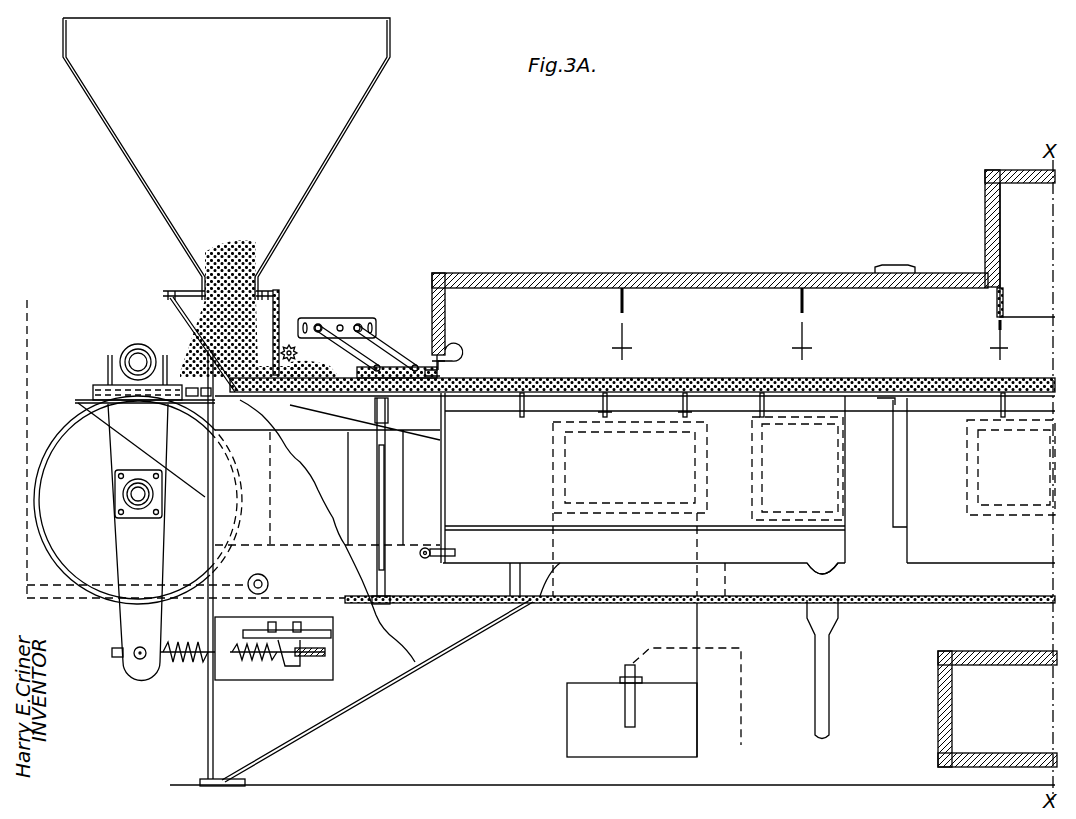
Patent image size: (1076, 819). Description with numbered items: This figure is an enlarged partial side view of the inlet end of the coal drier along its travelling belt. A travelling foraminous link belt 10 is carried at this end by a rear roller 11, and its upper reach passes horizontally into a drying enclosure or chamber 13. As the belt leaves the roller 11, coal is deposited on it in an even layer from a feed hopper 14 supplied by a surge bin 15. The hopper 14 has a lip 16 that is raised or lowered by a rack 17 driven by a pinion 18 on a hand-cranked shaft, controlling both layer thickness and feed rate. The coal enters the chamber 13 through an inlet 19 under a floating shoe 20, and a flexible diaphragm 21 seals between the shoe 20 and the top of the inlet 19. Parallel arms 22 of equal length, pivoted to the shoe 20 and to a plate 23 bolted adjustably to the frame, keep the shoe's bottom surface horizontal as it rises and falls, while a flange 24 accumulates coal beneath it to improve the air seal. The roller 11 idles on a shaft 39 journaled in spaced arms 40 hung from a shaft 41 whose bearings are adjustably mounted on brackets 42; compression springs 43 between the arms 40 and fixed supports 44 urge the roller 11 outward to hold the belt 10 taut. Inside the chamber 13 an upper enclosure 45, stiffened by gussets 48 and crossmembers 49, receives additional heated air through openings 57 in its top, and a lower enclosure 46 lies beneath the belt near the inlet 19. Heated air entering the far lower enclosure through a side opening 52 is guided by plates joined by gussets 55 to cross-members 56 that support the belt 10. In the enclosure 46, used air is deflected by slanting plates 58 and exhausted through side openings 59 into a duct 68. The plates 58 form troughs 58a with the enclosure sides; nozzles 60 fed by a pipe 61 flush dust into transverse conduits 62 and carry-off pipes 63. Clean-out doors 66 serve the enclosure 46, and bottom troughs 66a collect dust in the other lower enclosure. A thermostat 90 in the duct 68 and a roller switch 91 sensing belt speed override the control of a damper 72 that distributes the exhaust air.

The travelling foraminous link belt 10 is at (498, 398).
The rear roller 11 is at (88, 570).
The drying enclosure or chamber 13 is at (692, 273).
The feed hopper 14 is at (175, 308).
The surge bin 15 is at (146, 142).
The lip 16 is at (262, 404).
The rack 17 is at (283, 333).
The pinion 18 is at (298, 353).
The inlet 19 is at (442, 378).
The floating shoe 20 is at (398, 362).
The flexible diaphragm 21 is at (452, 345).
The parallel arms 22 is at (385, 350).
The plate 23 is at (361, 318).
The flange 24 is at (342, 368).
The shaft 39 is at (130, 494).
The spaced arms 40 is at (132, 630).
The shaft 41 is at (136, 360).
The brackets 42 is at (97, 422).
The compression springs 43 is at (180, 665).
The fixed supports 44 is at (285, 672).
The upper enclosure 45 is at (830, 273).
The lower enclosure 46 is at (445, 480).
The gussets 48 is at (800, 298).
The crossmembers 49 is at (612, 350).
The side opening 52 is at (980, 472).
The gussets 55 is at (683, 418).
The cross-members 56 is at (680, 410).
The openings 57 is at (995, 216).
The deflector plates 58 is at (729, 603).
The troughs 58a is at (545, 578).
The side openings 59 is at (565, 472).
The nozzles 60 is at (432, 558).
The pipe 61 is at (424, 548).
The transverse conduits 62 is at (822, 566).
The carry-off pipes 63 is at (806, 612).
The clean-out doors 66 is at (756, 470).
The bottom troughs 66a is at (930, 603).
The duct 68 is at (590, 718).
The damper 72 is at (383, 512).
The thermostat 90 is at (624, 668).
The roller switch 91 is at (270, 582).